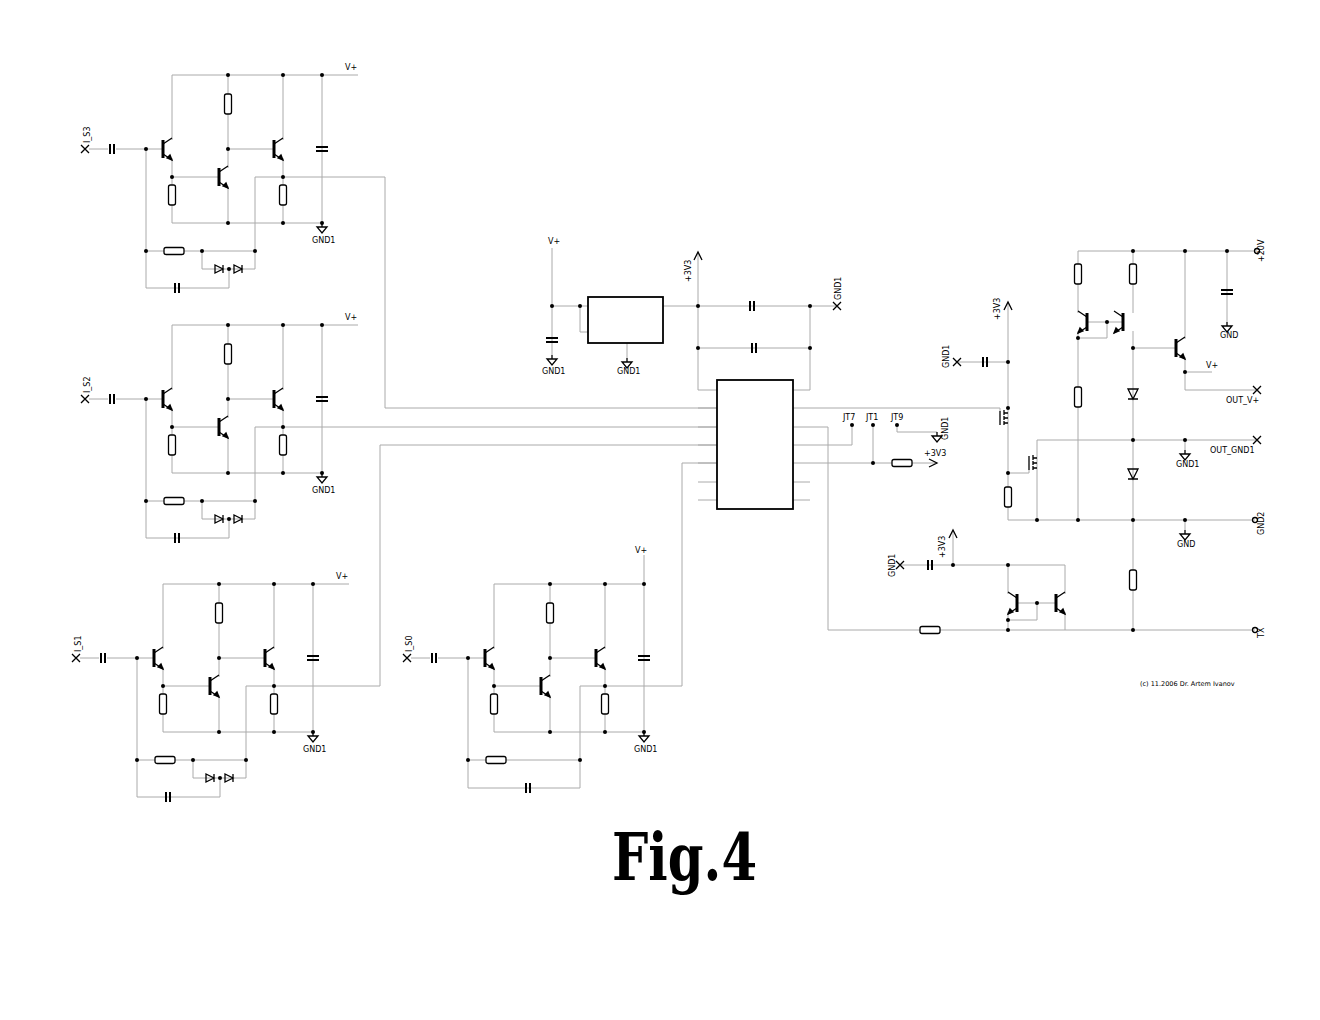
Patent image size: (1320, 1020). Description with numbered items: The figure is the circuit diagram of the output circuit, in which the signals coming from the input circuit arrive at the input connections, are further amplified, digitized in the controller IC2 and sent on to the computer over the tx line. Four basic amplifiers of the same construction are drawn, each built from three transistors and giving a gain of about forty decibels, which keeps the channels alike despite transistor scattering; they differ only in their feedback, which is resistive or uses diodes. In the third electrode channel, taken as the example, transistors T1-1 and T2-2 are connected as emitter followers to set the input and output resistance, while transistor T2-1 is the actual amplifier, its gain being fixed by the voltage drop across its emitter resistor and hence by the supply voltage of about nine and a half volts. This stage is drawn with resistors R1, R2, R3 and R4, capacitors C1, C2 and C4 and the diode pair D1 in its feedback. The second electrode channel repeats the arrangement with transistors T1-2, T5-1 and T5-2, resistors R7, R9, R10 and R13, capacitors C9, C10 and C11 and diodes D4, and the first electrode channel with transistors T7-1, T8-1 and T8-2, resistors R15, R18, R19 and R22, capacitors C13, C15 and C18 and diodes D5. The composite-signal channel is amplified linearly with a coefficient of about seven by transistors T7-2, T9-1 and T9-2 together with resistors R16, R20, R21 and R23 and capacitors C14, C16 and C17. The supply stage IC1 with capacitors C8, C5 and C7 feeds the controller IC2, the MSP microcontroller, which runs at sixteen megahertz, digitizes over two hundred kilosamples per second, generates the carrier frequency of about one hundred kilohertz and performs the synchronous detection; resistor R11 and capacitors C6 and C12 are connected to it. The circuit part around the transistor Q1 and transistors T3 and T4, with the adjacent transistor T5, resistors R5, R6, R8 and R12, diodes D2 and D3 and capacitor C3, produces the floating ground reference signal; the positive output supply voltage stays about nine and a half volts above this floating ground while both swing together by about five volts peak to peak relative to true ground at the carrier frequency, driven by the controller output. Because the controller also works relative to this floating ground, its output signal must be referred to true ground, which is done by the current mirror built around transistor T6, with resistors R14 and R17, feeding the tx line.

The transistor T1-1 is at (149, 138).
The transistor T2-1 is at (205, 166).
The transistor T2-2 is at (261, 138).
The resistor 220k R1 is at (227, 103).
The resistor 1k R2 is at (171, 195).
The resistor 3k3 R3 is at (282, 195).
The resistor 470k R4 is at (171, 252).
The capacitor 100n C1 is at (332, 150).
The capacitor 100n C2 is at (109, 138).
The capacitor 100n C4 is at (175, 278).
The diode BAV99W D1 is at (223, 271).
The transistor BC847S T1-2 is at (149, 388).
The transistor BC847S T5-1 is at (205, 416).
The transistor BC847S T5-2 is at (261, 388).
The resistor 220k R7 is at (227, 353).
The resistor 1k R9 is at (171, 445).
The resistor 3k3 R10 is at (282, 445).
The resistor 470k R13 is at (171, 502).
The capacitor 100n C9 is at (332, 400).
The capacitor 100n C10 is at (109, 388).
The capacitor 100n C11 is at (175, 528).
The diode BAV99W D4 is at (223, 521).
The transistor BC847S T7-1 is at (140, 647).
The transistor BC847S T8-1 is at (196, 675).
The transistor BC847S T8-2 is at (252, 647).
The resistor 220k R15 is at (218, 612).
The resistor 1k R18 is at (162, 704).
The resistor 3k3 R19 is at (273, 704).
The resistor 470k R22 is at (162, 761).
The capacitor 100n C13 is at (323, 659).
The capacitor 100n C15 is at (100, 647).
The capacitor 100n C18 is at (166, 787).
The diode BAV99W D5 is at (214, 780).
The transistor T7-2 is at (471, 647).
The transistor T9-1 is at (527, 675).
The transistor T9-2 is at (583, 647).
The resistor 220k R16 is at (549, 612).
The resistor 1k R20 is at (493, 704).
The resistor 3k3 R21 is at (604, 704).
The resistor 220k R23 is at (493, 761).
The capacitor 100n C14 is at (654, 659).
The capacitor 100n C16 is at (431, 647).
The capacitor 1p C17 is at (527, 779).
The voltage regulator MAX1726 3.3V IC1 is at (631, 314).
The capacitor 1u 25V C8 is at (569, 338).
The capacitor 10u C5 is at (751, 297).
The capacitor 100n C7 is at (753, 338).
The microcontroller MSP430F2012PW IC2 is at (754, 450).
The resistor 100 R5 is at (1077, 274).
The resistor 100 R6 is at (1132, 274).
The resistor 22k R8 is at (1077, 397).
The resistor 47k R11 is at (902, 463).
The resistor 1k R12 is at (1007, 497).
The resistor 4k7 R14 is at (1132, 580).
The resistor 4k3 R17 is at (930, 630).
The capacitor 1u 25V C3 is at (1245, 291).
The capacitor 100n C6 is at (982, 370).
The capacitor 100n C12 is at (927, 574).
The transistor T3 is at (1100, 312).
The transistor T4 is at (1162, 336).
The transistor BCV62C T5 is at (1120, 317).
The transistor T6 is at (1036, 595).
The transistor Q1 is at (1044, 438).
The zener diode BZX84C10 D2 is at (1133, 391).
The zener diode BZX84C5V1 D3 is at (1133, 470).